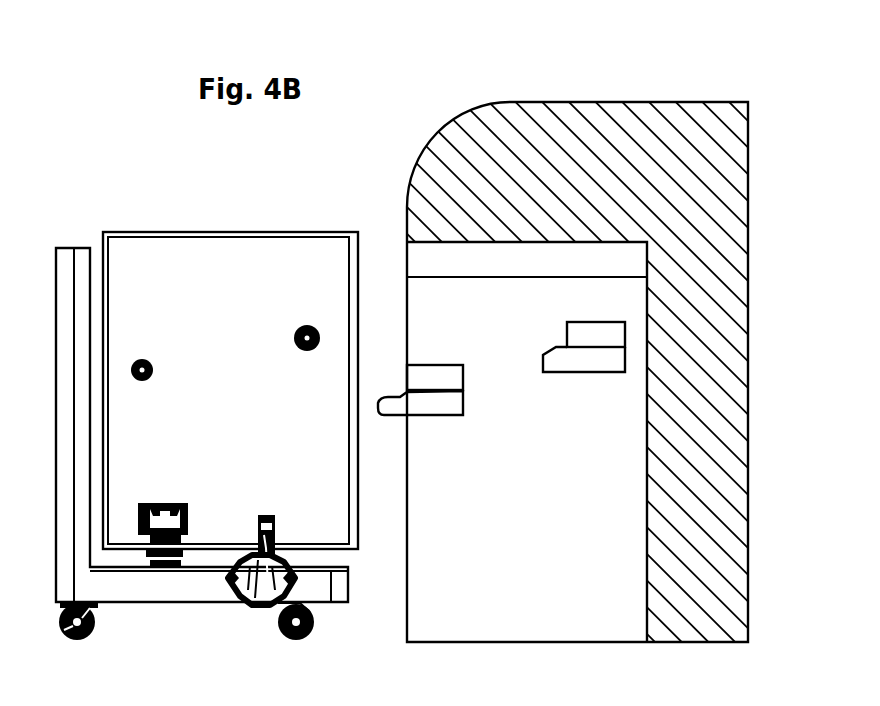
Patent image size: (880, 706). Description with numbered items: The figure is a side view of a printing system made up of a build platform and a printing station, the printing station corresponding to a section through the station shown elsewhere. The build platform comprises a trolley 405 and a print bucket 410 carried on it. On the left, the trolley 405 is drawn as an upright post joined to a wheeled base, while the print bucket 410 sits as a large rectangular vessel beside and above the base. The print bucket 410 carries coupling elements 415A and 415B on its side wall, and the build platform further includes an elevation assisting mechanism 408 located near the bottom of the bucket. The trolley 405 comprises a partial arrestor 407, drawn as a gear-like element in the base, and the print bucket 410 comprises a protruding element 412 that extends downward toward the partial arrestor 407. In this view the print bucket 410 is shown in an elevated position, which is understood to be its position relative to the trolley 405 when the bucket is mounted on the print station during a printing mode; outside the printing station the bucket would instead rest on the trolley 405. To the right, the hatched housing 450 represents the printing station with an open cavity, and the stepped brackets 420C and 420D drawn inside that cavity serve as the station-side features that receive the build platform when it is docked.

The trolley 405 is at (60, 248).
The print bucket 410 is at (230, 235).
The coupling element 415A is at (142, 362).
The coupling element 415B is at (307, 325).
The elevation assisting mechanism 408 is at (160, 505).
The protruding element 412 is at (267, 516).
The partial arrestor 407 is at (242, 597).
The housing 450 is at (557, 102).
The third guide bracket 420C is at (413, 392).
The fourth guide bracket 420D is at (612, 360).